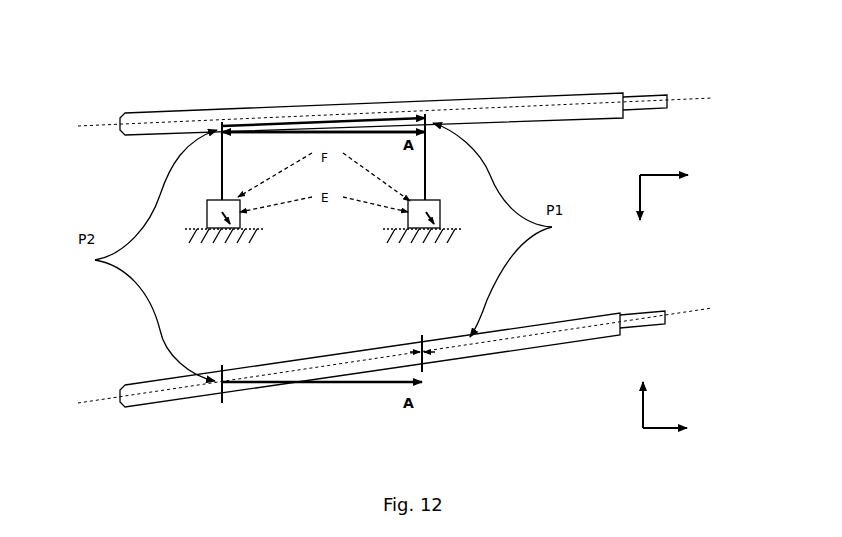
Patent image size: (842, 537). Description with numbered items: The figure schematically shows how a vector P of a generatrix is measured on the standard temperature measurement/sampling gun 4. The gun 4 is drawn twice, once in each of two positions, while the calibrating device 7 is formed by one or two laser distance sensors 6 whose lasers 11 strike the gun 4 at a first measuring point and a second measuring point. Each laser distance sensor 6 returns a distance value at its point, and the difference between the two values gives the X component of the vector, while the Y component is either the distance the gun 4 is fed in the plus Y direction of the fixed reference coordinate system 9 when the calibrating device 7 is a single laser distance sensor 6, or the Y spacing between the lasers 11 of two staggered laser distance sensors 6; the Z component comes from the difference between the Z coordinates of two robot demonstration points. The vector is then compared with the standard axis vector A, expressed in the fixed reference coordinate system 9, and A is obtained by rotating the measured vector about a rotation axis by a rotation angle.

The standard temperature measurement/sampling gun 4 is at (380, 100).
The laser distance sensor 6 is at (236, 236).
The calibrating device 7 is at (203, 240).
The fixed reference coordinate system 9 is at (646, 180).
The laser 11 is at (222, 167).